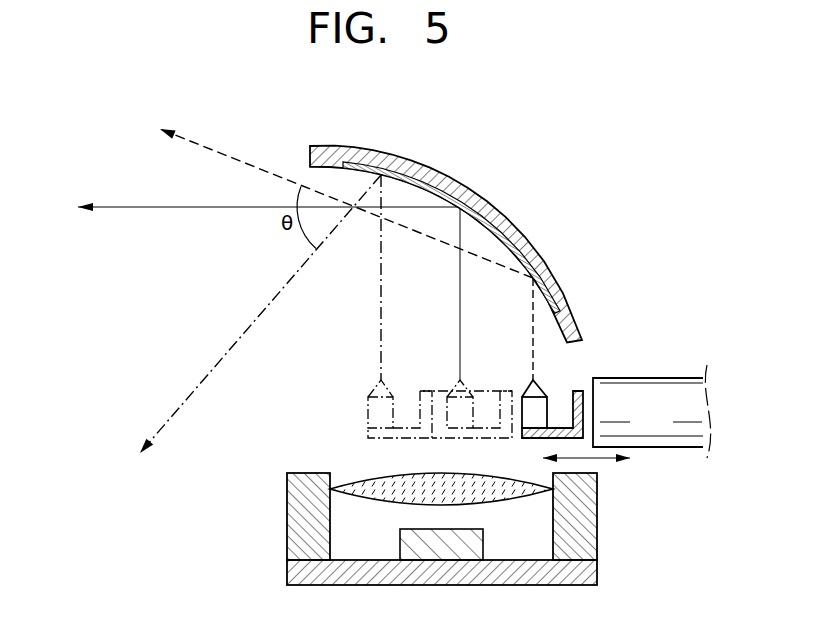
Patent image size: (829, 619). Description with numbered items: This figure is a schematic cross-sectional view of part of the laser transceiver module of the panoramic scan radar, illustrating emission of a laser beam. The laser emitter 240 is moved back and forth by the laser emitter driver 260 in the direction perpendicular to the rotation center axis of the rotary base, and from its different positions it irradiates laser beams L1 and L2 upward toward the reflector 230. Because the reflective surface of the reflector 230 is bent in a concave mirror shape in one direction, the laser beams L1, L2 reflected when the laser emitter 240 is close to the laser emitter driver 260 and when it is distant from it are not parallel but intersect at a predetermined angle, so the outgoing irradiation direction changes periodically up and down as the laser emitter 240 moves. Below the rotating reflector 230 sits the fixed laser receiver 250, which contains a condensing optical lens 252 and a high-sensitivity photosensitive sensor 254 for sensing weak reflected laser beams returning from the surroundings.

The reflector 230 is at (500, 212).
The laser emitter 240 is at (540, 410).
The laser receiver 250 is at (374, 535).
The optical lens 252 is at (367, 490).
The photosensitive sensor 254 is at (415, 548).
The laser emitter driver 260 is at (675, 438).
The laser beam L1 is at (230, 157).
The laser beam L2 is at (192, 388).